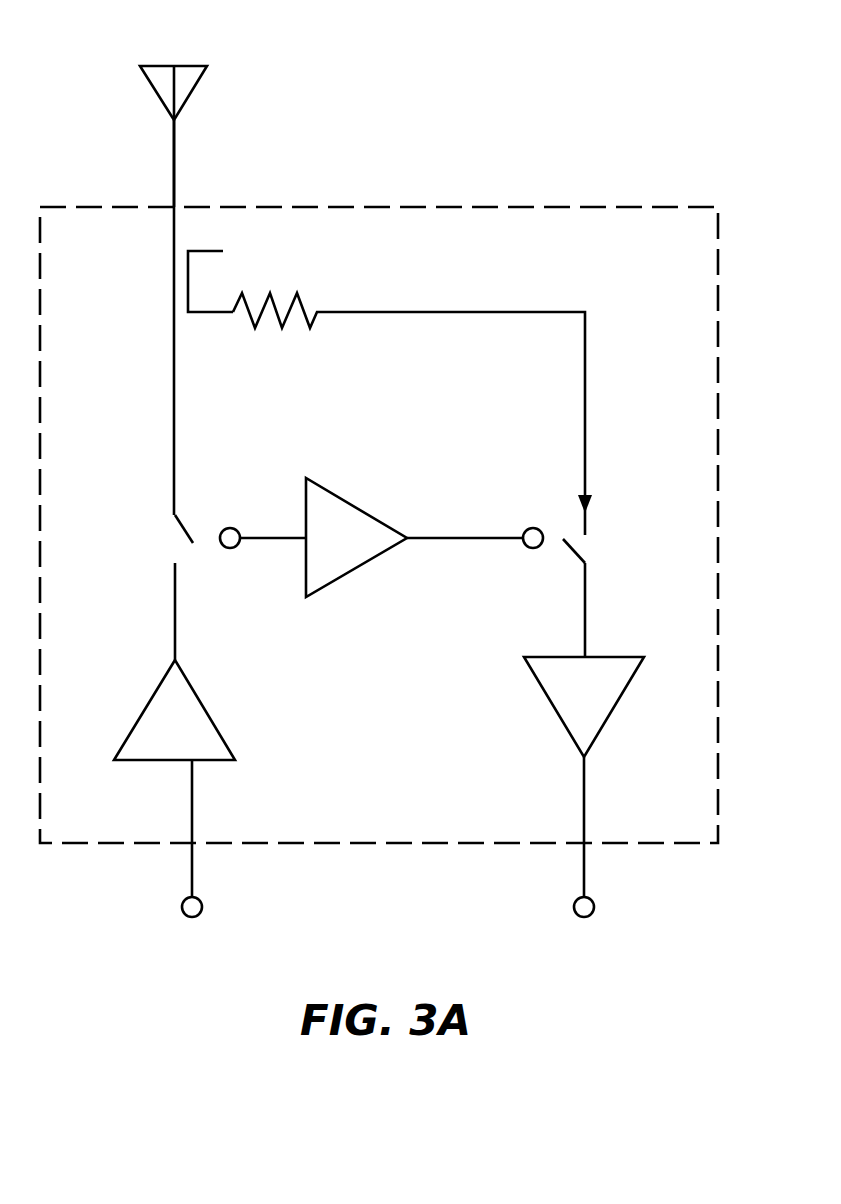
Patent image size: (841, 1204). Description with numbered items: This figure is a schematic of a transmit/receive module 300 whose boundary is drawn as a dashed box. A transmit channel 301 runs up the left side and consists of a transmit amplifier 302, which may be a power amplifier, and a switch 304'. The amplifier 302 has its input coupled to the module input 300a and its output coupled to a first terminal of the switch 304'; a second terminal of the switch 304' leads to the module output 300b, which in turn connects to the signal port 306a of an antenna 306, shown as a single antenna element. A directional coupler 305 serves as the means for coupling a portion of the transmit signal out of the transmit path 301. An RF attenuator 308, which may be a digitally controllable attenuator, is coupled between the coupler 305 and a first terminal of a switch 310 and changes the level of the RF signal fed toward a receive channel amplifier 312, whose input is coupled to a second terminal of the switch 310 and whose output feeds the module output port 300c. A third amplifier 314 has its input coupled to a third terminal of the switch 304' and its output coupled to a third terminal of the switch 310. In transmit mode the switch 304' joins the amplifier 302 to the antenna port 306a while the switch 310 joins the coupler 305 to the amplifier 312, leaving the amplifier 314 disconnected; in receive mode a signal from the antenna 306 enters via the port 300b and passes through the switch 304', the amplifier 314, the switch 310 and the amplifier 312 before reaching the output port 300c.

The T/R module 300 is at (657, 247).
The transmit input port 300a is at (190, 867).
The output of T/R module 300b is at (176, 168).
The T/R module output port 300c is at (586, 866).
The transmit channel 301 is at (126, 497).
The transmit amplifier 302 is at (196, 742).
The switch 304' is at (129, 594).
The directional coupler 305 is at (192, 334).
The antenna 306 is at (190, 64).
The signal port of antenna 306a is at (172, 134).
The RF attenuator 308 is at (278, 302).
The switch 310 is at (588, 546).
The receive channel amplifier 312 is at (605, 704).
The third amplifier 314 is at (367, 550).